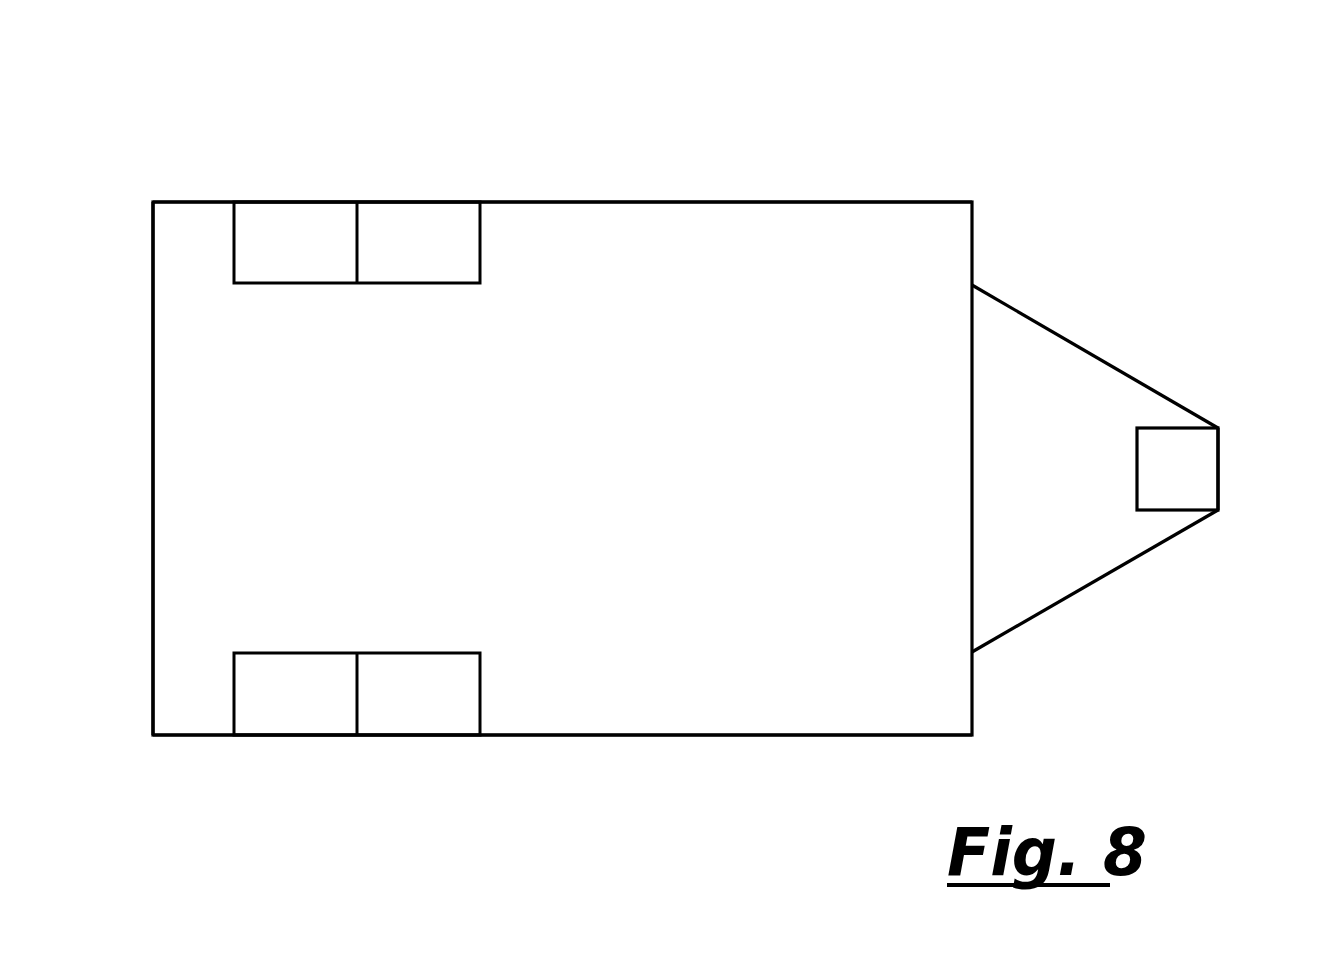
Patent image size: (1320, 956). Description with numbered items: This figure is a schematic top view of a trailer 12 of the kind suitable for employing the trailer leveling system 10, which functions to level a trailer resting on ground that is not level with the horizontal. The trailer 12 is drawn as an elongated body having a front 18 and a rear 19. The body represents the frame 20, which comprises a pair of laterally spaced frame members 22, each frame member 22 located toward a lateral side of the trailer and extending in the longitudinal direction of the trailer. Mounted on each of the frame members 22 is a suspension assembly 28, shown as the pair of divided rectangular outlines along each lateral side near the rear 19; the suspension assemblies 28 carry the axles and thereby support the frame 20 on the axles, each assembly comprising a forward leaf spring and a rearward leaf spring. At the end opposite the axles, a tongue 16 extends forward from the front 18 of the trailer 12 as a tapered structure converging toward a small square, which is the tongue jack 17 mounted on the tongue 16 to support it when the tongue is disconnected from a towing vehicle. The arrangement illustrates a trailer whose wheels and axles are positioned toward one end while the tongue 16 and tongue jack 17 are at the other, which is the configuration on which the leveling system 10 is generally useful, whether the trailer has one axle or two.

The trailer leveling system 10 is at (1043, 98).
The trailer 12 is at (910, 201).
The tongue 16 is at (1042, 322).
The tongue jack 17 is at (1220, 490).
The front 18 is at (1180, 400).
The rear 19 is at (152, 531).
The frame 20 is at (706, 201).
The frame members 22 is at (625, 735).
The suspension assembly 28 is at (316, 201).